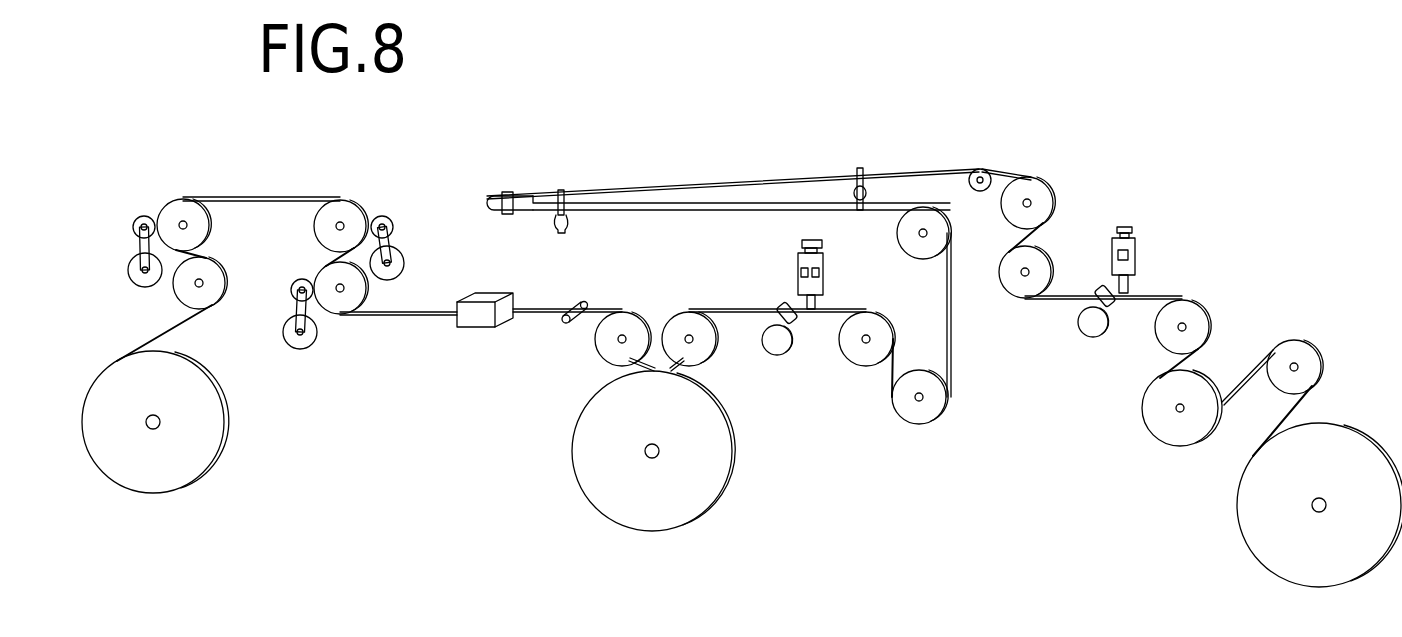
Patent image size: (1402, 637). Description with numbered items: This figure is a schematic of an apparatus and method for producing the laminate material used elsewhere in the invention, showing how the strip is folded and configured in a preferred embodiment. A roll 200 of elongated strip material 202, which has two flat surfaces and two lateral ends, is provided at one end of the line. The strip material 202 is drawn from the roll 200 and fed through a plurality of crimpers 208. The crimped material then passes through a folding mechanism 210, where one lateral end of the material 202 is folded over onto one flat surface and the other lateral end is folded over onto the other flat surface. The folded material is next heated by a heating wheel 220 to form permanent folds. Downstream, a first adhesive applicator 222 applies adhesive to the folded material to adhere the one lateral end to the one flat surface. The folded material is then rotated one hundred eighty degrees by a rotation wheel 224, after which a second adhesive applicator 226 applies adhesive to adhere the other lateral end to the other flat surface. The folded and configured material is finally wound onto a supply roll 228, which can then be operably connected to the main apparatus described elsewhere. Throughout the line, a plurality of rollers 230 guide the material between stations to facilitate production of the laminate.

The roll 200 is at (210, 433).
The strip material 202 is at (167, 332).
The crimpers 208 is at (137, 219).
The folding mechanism 210 is at (500, 327).
The heating wheel 220 is at (593, 462).
The first adhesive applicator 222 is at (788, 305).
The rotation wheel 224 is at (520, 192).
The second adhesive applicator 226 is at (1107, 283).
The supply roll 228 is at (1260, 527).
The rollers 230 is at (178, 199).